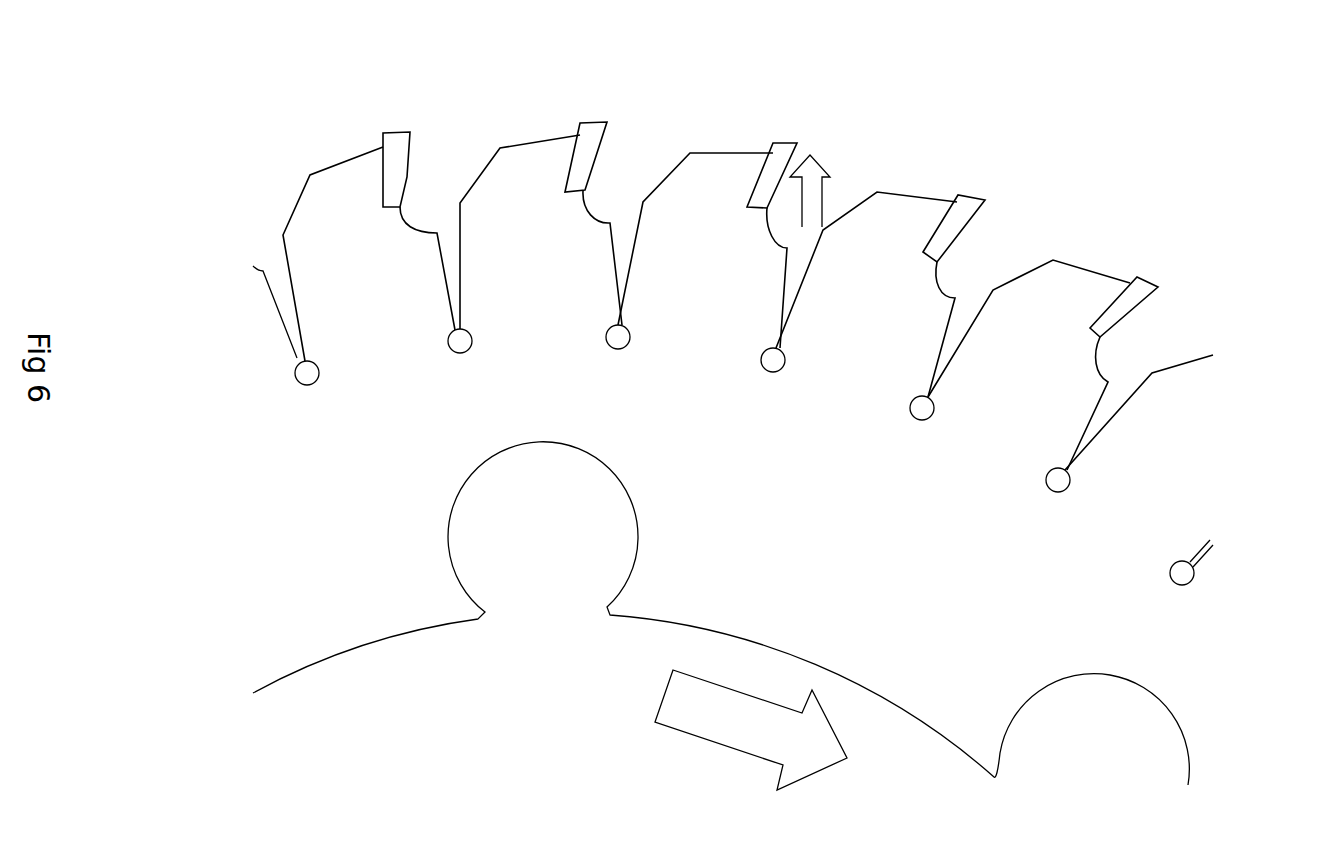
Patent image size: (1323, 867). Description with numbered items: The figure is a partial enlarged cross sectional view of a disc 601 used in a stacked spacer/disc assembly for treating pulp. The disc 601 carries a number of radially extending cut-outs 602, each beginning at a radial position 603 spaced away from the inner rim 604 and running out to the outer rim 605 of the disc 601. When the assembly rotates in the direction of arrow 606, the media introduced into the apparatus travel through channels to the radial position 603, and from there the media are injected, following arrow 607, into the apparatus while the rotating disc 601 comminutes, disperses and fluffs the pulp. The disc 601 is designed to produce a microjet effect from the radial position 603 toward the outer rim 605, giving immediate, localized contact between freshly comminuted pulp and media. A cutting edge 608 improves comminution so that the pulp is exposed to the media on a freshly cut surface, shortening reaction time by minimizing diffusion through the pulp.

The disc 601 is at (1240, 137).
The radially extending cut-out 602 is at (968, 293).
The radial position 603 is at (933, 407).
The inner rim 604 is at (630, 620).
The outer rim 605 is at (727, 150).
The arrow 606 is at (683, 707).
The arrow 607 is at (818, 168).
The cutting edge 608 is at (988, 202).